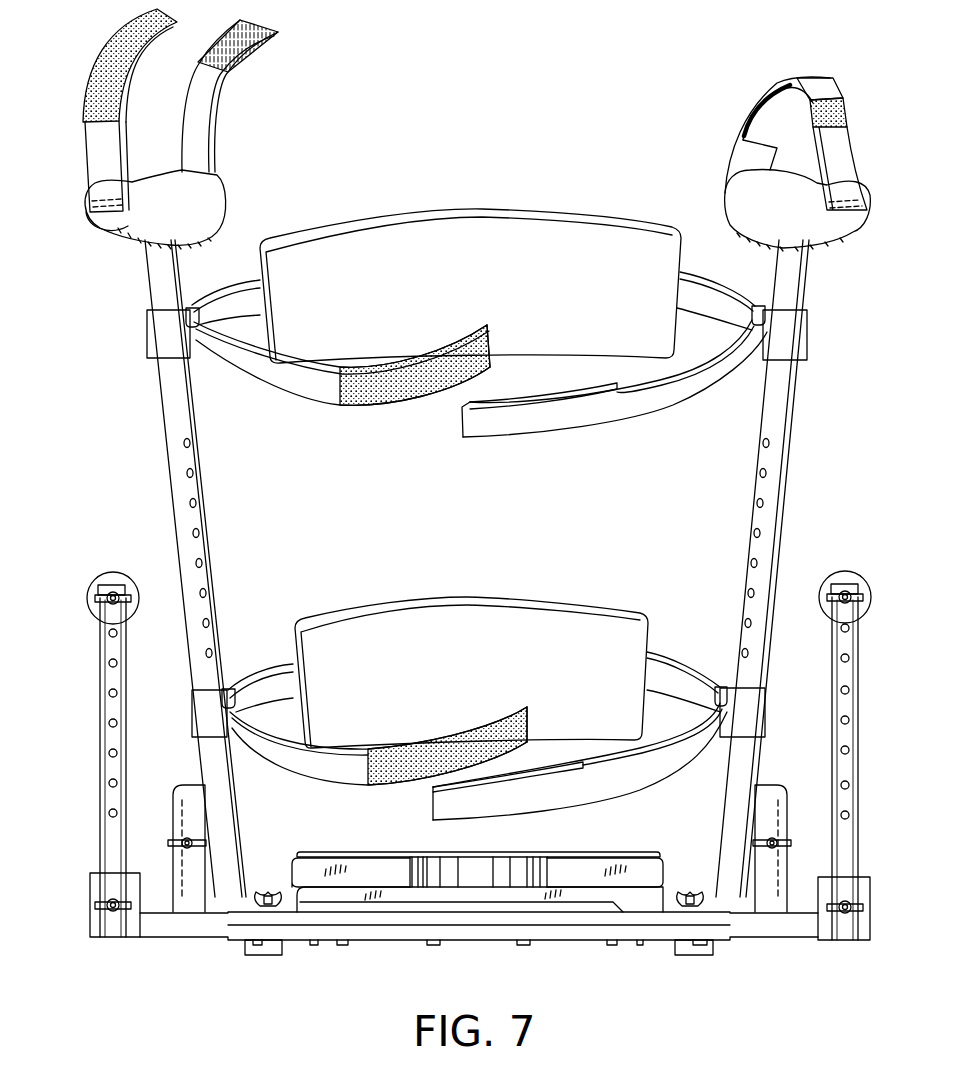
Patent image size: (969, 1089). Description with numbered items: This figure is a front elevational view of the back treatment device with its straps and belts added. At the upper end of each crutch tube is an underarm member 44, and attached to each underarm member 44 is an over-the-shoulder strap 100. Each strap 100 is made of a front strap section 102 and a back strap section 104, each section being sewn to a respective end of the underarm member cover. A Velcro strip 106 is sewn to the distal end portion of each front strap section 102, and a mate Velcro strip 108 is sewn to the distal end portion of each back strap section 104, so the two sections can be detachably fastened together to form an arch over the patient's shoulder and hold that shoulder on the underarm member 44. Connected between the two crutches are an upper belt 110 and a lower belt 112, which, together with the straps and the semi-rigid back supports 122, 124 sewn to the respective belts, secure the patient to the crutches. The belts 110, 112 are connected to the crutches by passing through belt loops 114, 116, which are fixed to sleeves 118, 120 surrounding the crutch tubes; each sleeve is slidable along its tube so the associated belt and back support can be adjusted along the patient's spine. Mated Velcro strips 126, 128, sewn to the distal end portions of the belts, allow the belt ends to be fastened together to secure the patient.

The underarm member 44 is at (225, 193).
The over-the-shoulder strap 100 is at (744, 118).
The front strap section 102 is at (87, 148).
The back strap section 104 is at (218, 122).
The Velcro strip 106 is at (107, 32).
The mate Velcro strip 108 is at (246, 43).
The upper belt 110 is at (648, 412).
The lower belt 112 is at (270, 762).
The belt loop 114 is at (188, 306).
The belt loop 116 is at (225, 687).
The sleeve 118 is at (150, 335).
The sleeve 120 is at (191, 718).
The semi-rigid back support 122 is at (482, 208).
The semi-rigid back support 124 is at (452, 597).
The Velcro strip 126 is at (408, 390).
The mate Velcro strip 128 is at (500, 400).